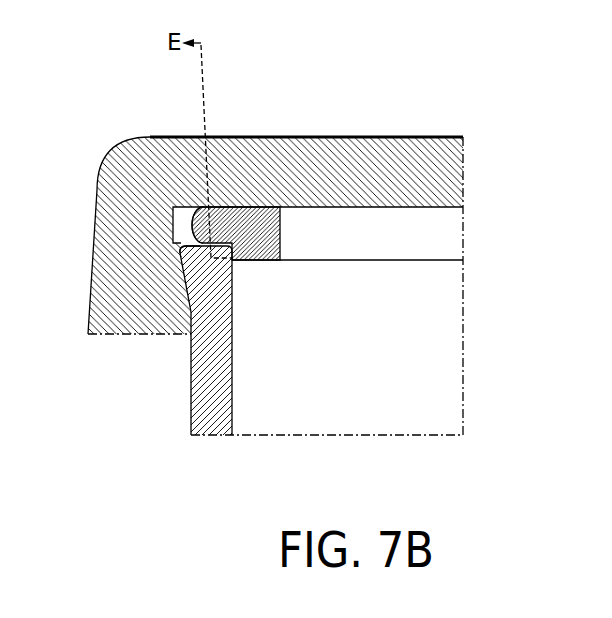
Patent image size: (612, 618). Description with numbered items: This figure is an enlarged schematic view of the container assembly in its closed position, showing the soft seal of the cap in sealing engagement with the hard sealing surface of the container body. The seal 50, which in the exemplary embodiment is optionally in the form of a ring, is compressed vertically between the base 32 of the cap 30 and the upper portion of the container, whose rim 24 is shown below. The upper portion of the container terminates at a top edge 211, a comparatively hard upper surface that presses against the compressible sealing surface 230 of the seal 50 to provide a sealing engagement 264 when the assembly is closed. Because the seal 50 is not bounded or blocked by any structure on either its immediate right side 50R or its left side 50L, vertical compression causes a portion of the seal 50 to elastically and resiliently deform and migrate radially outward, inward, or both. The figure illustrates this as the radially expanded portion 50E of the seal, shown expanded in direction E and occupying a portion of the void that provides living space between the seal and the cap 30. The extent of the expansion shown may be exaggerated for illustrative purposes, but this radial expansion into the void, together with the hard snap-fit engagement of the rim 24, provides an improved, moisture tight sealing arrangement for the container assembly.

The cap 30 is at (187, 160).
The base 32 is at (305, 160).
The seal 50 is at (268, 247).
The left side of seal 50L is at (182, 213).
The right side of seal 50R is at (291, 227).
The radially expanded portion of seal 50E is at (190, 230).
The sealing engagement 264 is at (231, 239).
The top edge 211 is at (194, 252).
The rim 24 is at (202, 263).
The compressible sealing surface 230 is at (260, 266).